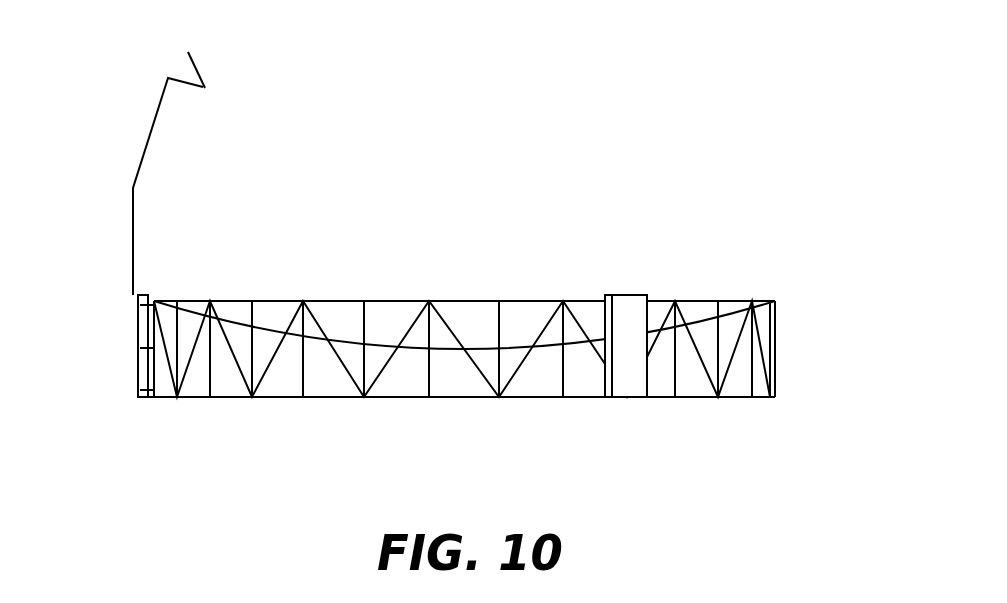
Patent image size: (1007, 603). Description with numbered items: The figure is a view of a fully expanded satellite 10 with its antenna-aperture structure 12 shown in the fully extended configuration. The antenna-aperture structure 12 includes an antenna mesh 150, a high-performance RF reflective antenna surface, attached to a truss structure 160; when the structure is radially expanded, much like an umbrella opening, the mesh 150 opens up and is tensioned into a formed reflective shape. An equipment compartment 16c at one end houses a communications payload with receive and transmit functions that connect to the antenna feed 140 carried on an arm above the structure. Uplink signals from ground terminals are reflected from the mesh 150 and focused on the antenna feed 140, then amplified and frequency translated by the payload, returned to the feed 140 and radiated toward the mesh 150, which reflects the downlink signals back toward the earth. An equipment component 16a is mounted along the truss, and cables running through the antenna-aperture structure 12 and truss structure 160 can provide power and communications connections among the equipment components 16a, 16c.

The modular truss assembly 10 is at (409, 257).
The antenna-aperture structure 12 is at (378, 398).
The equipment component 16a is at (625, 317).
The equipment compartment 16c is at (137, 373).
The antenna feed 140 is at (200, 73).
The antenna mesh 150 is at (477, 345).
The truss structure 160 is at (294, 301).